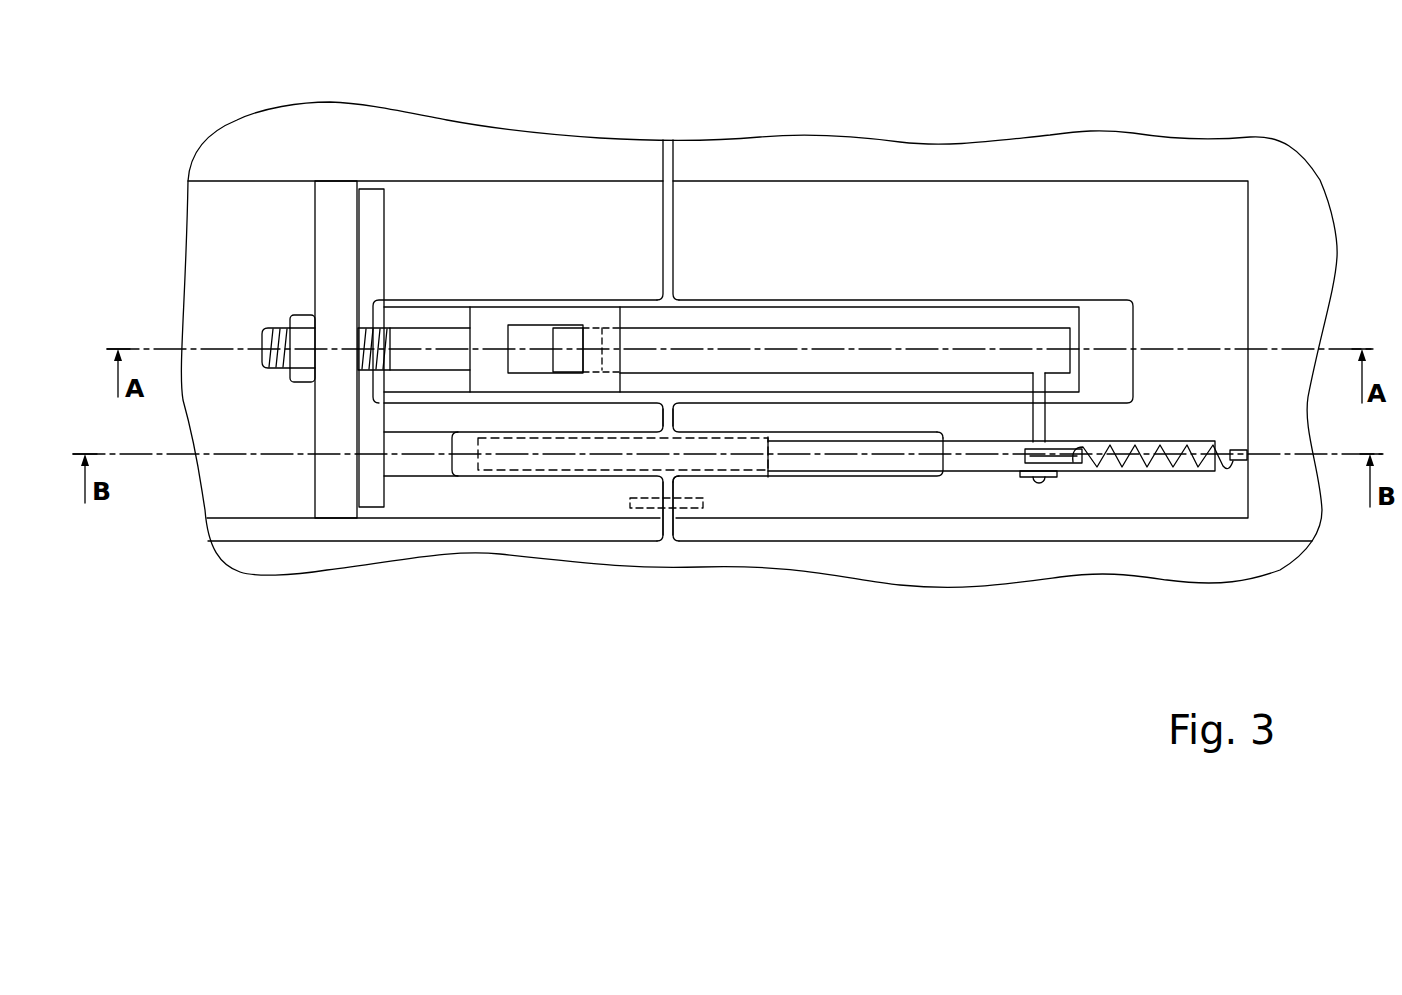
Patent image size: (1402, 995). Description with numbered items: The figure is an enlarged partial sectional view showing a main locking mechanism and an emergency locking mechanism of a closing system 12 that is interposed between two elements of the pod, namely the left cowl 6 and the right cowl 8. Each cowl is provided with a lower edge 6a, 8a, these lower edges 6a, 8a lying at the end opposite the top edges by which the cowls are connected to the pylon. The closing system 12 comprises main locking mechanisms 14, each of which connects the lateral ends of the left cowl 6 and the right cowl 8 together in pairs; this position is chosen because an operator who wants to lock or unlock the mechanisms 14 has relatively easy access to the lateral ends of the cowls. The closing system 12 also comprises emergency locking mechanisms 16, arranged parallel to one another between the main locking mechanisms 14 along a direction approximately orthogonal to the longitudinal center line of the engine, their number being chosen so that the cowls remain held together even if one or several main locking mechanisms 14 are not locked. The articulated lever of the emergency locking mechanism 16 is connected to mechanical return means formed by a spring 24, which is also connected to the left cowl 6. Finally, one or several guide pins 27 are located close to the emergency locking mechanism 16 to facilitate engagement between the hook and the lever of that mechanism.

The left cowl 6 is at (1297, 518).
The lower edge 6a is at (668, 508).
The right cowl 8 is at (246, 483).
The lower edge 8a is at (667, 540).
The closing system 12 is at (592, 158).
The main locking mechanism 14 is at (987, 343).
The emergency locking mechanism 16 is at (763, 457).
The spring 24 is at (1160, 462).
The guide pin 27 is at (630, 503).